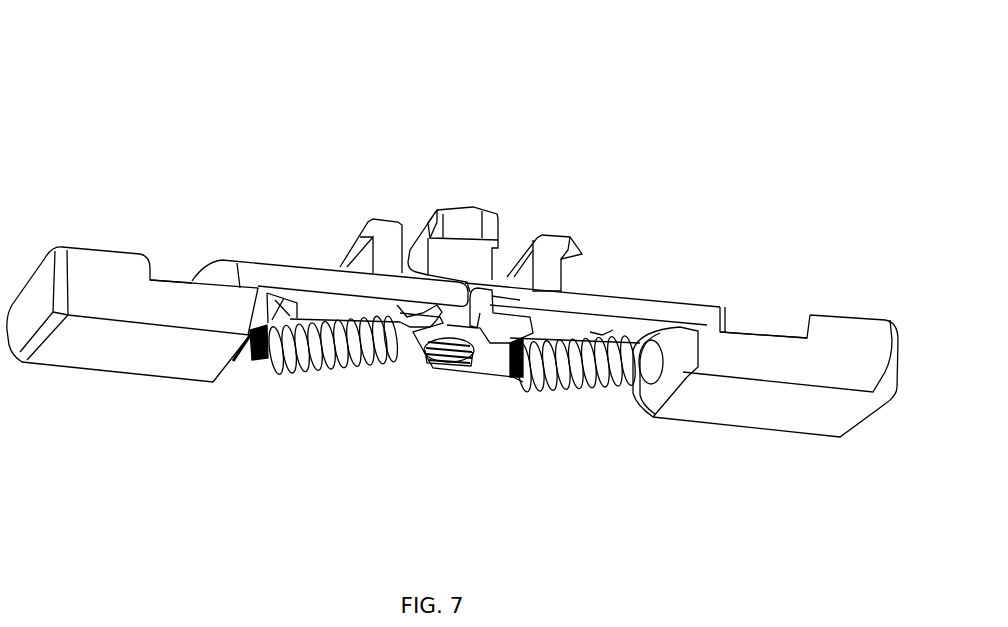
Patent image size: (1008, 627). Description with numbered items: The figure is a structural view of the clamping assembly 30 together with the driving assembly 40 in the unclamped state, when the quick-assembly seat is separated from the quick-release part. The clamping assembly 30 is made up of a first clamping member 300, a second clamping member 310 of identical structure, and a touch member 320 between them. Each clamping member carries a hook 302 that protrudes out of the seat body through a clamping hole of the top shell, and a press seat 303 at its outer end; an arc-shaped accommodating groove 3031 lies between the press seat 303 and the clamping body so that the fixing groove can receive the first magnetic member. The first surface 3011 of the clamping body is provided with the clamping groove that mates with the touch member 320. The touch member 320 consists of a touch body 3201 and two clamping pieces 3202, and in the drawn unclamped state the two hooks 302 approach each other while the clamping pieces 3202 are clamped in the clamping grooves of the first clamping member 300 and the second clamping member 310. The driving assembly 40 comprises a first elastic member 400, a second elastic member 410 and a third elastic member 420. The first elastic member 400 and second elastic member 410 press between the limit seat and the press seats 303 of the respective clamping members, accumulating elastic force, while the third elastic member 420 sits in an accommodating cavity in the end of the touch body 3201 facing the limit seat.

The clamping assembly 30 is at (885, 122).
The first clamping member 300 is at (708, 276).
The first surface 3011 is at (602, 333).
The hook 302 is at (386, 238).
The press seat 303 is at (112, 280).
The accommodating groove 3031 is at (177, 275).
The second clamping member 310 is at (288, 250).
The touch member 320 is at (402, 138).
The touch body 3201 is at (469, 228).
The clamping piece 3202 is at (416, 295).
The driving assembly 40 is at (350, 482).
The first elastic member 400 is at (568, 372).
The second elastic member 410 is at (340, 367).
The third elastic member 420 is at (450, 368).